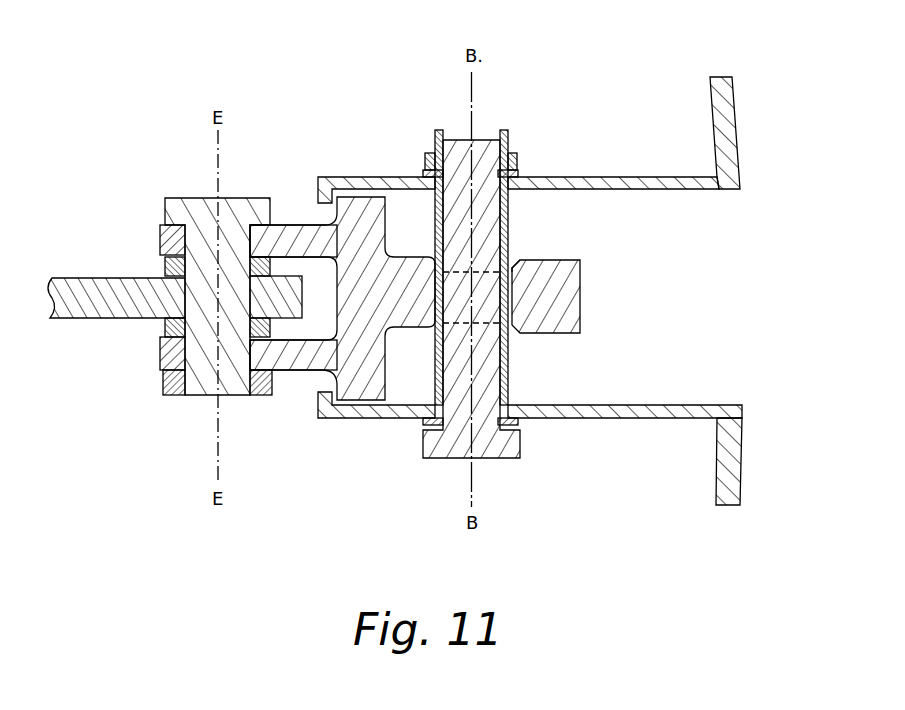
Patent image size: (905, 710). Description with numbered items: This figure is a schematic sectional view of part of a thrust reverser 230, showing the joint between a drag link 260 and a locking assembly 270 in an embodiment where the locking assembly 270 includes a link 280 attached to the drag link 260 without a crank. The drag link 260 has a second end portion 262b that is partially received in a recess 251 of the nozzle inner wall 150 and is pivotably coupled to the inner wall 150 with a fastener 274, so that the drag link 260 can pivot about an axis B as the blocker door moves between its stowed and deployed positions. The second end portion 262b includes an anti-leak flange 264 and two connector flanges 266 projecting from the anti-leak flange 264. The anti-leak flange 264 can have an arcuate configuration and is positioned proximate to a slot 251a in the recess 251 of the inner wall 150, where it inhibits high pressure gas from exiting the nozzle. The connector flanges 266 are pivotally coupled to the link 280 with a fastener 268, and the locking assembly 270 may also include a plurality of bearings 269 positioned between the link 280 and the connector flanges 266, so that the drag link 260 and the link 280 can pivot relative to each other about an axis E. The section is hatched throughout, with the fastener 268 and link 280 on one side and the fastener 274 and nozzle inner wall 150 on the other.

The thrust reverser 230 is at (252, 58).
The locking assembly 270 is at (343, 486).
The recess 251 is at (590, 180).
The slot 251a is at (313, 390).
The nozzle inner wall 150 is at (740, 472).
The fastener 274 is at (492, 362).
The drag link 260 is at (576, 298).
The second end portion 262b is at (548, 262).
The anti-leak flange 264 is at (357, 205).
The connector flanges 266 is at (290, 232).
The fastener 268 is at (200, 396).
The bearings 269 is at (165, 320).
The link 280 is at (107, 305).